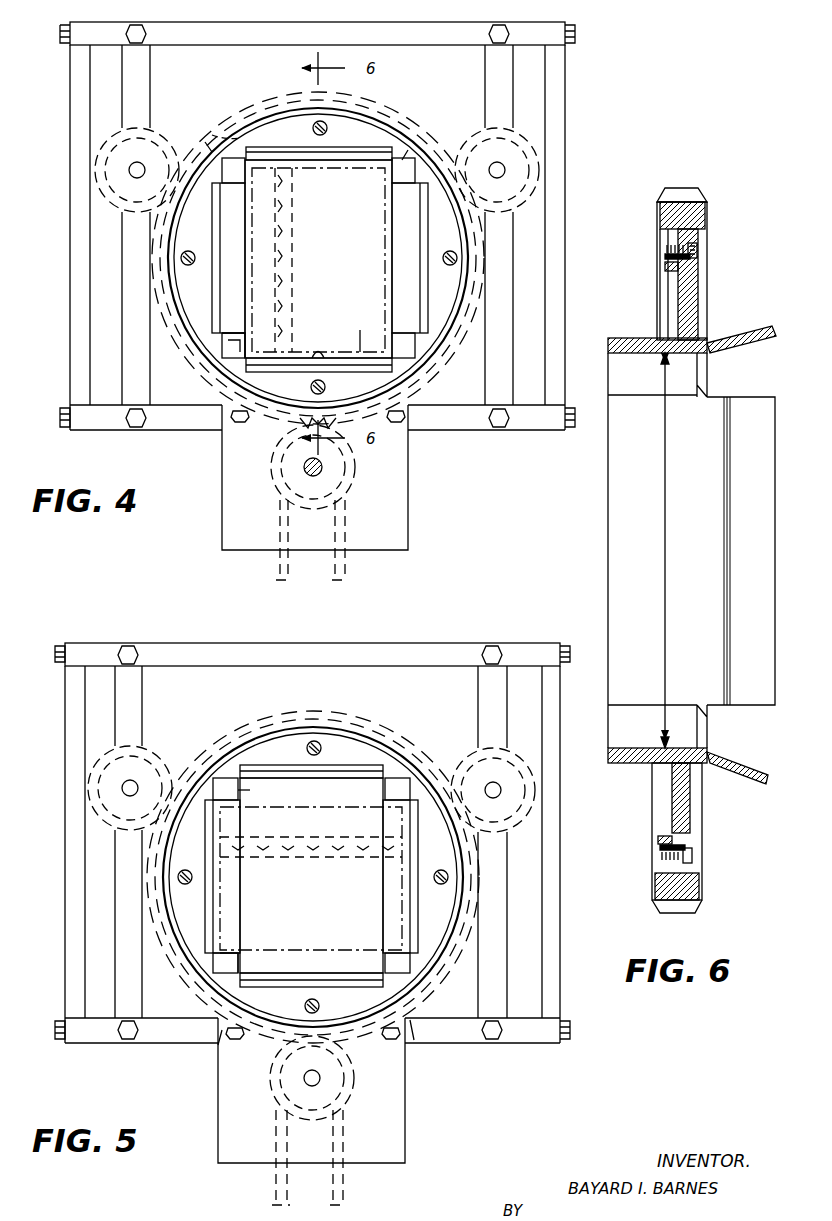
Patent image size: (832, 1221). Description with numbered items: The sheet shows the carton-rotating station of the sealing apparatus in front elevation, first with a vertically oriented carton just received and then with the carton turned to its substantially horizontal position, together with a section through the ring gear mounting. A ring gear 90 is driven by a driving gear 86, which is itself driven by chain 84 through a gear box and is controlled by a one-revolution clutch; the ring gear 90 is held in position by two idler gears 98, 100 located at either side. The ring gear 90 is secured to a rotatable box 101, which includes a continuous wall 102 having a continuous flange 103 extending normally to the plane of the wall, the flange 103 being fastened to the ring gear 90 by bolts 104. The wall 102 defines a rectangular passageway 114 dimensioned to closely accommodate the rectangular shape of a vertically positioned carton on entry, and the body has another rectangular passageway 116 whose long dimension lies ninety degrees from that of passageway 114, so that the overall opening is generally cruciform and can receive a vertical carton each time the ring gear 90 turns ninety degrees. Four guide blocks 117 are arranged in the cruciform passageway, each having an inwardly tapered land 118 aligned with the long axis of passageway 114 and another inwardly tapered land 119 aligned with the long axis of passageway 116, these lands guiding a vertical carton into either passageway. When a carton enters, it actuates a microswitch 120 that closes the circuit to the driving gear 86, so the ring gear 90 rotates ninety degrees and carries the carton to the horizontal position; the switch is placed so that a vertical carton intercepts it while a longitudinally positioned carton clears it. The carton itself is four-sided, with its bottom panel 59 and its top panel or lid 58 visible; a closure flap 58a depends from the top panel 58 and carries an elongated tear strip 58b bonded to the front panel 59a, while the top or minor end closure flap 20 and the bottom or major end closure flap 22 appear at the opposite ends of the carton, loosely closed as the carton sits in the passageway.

In FIG. 4, the top or minor end closure flap 20 is at (308, 134).
In FIG. 5, the top or minor end closure flap 20 is at (398, 822).
In FIG. 4, the bottom or major end closure flap 22 is at (352, 160).
In FIG. 5, the bottom or major end closure flap 22 is at (400, 912).
In FIG. 4, the top panel or lid 58 is at (248, 232).
In FIG. 5, the top panel or lid 58 is at (343, 803).
In FIG. 4, the closure flap 58a is at (278, 200).
In FIG. 5, the closure flap 58a is at (325, 822).
In FIG. 4, the elongated tear strip 58b is at (290, 230).
In FIG. 5, the elongated tear strip 58b is at (250, 845).
In FIG. 4, the bottom panel 59 is at (385, 312).
In FIG. 5, the bottom panel 59 is at (348, 953).
In FIG. 4, the front panel 59a is at (365, 335).
In FIG. 4, the chain 84 is at (348, 568).
In FIG. 4, the driving gear 86 is at (340, 478).
In FIG. 4, the ring gear 90 is at (410, 118).
In FIG. 6, the ring gear 90 is at (688, 188).
In FIG. 4, the idler gear 98 is at (100, 152).
In FIG. 4, the idler gear 100 is at (528, 152).
In FIG. 6, the rotatable box 101 is at (722, 320).
In FIG. 6, the continuous wall 102 is at (635, 340).
In FIG. 4, the continuous flange 103 is at (377, 130).
In FIG. 6, the continuous flange 103 is at (672, 290).
In FIG. 4, the bolts 104 is at (318, 275).
In FIG. 5, the bolts 104 is at (316, 740).
In FIG. 6, the bolts 104 is at (703, 250).
In FIG. 4, the rectangular passageway 114 is at (322, 352).
In FIG. 6, the rectangular passageway 114 is at (660, 525).
In FIG. 4, the rectangular passageway 116 is at (388, 262).
In FIG. 4, the guide blocks 117 is at (210, 140).
In FIG. 5, the guide blocks 117 is at (222, 1030).
In FIG. 4, the inwardly tapered land 118 is at (222, 340).
In FIG. 5, the inwardly tapered land 118 is at (235, 965).
In FIG. 4, the inwardly tapered land 119 is at (240, 350).
In FIG. 5, the inwardly tapered land 119 is at (222, 950).
In FIG. 4, the microswitch 120 is at (252, 126).
In FIG. 5, the microswitch 120 is at (245, 793).